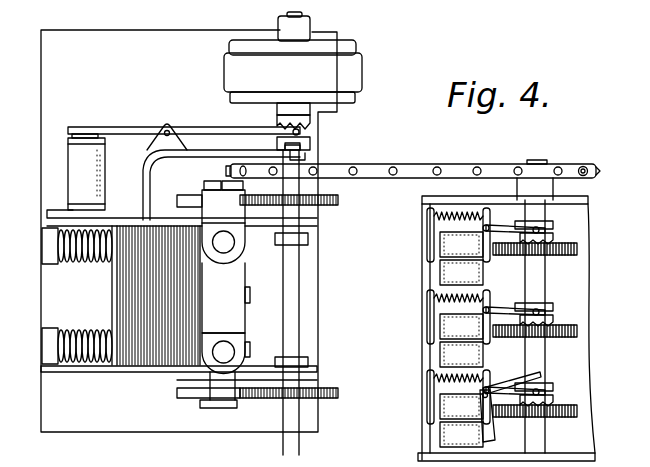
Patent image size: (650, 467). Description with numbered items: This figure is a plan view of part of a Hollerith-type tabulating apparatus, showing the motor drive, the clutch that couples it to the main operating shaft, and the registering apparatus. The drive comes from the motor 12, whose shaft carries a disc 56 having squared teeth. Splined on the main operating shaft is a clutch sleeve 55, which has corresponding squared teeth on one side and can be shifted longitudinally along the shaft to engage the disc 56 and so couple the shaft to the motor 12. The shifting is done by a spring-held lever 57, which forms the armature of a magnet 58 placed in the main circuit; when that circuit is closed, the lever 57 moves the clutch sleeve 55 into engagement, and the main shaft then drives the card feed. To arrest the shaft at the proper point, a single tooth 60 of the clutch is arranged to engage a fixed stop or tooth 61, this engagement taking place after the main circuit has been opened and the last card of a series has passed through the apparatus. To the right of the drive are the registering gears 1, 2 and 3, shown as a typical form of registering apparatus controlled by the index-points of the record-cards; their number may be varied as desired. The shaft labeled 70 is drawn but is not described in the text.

The motor 12 is at (307, 63).
The disc 56 is at (316, 123).
The clutch sleeve 55 is at (311, 140).
The single tooth 60 is at (292, 146).
The fixed stop or tooth 61 is at (306, 153).
The spring-held lever 57 is at (204, 130).
The magnet 58 is at (100, 176).
The shaft 70 is at (295, 446).
The registering gear 3 is at (502, 246).
The registering gear 2 is at (502, 328).
The registering gear 1 is at (502, 408).